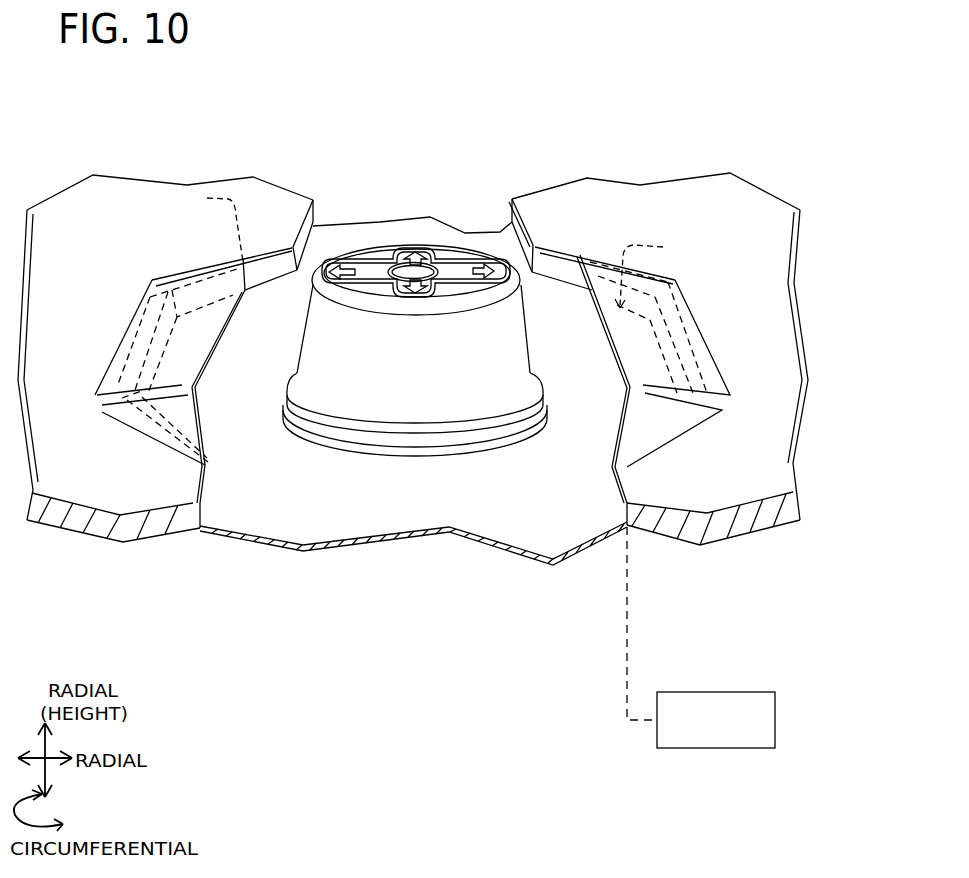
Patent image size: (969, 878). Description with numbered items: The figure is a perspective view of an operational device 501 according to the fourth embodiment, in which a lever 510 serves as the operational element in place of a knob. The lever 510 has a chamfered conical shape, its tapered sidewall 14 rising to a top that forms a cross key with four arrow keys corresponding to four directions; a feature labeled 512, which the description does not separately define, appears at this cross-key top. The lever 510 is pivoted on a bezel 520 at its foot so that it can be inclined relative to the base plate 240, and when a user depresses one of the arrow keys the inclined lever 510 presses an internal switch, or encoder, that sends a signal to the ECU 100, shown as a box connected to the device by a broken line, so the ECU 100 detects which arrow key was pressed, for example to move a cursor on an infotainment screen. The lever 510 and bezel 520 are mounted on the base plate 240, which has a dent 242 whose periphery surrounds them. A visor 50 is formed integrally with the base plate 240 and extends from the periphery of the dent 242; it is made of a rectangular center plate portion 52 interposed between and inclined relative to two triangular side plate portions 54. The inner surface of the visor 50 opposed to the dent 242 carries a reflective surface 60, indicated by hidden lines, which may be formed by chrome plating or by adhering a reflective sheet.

The operational device 501 is at (532, 93).
The direction switch 512 is at (342, 258).
The lever 510 is at (445, 242).
The base plate 240 is at (618, 167).
The reflective surface 60 is at (210, 225).
The side plate portion 54 is at (188, 272).
The center plate portion 52 is at (165, 340).
The sidewall 14 is at (312, 360).
The dent 242 is at (648, 317).
The visor 50 is at (690, 273).
The bezel 520 is at (499, 450).
The ECU 100 is at (727, 750).